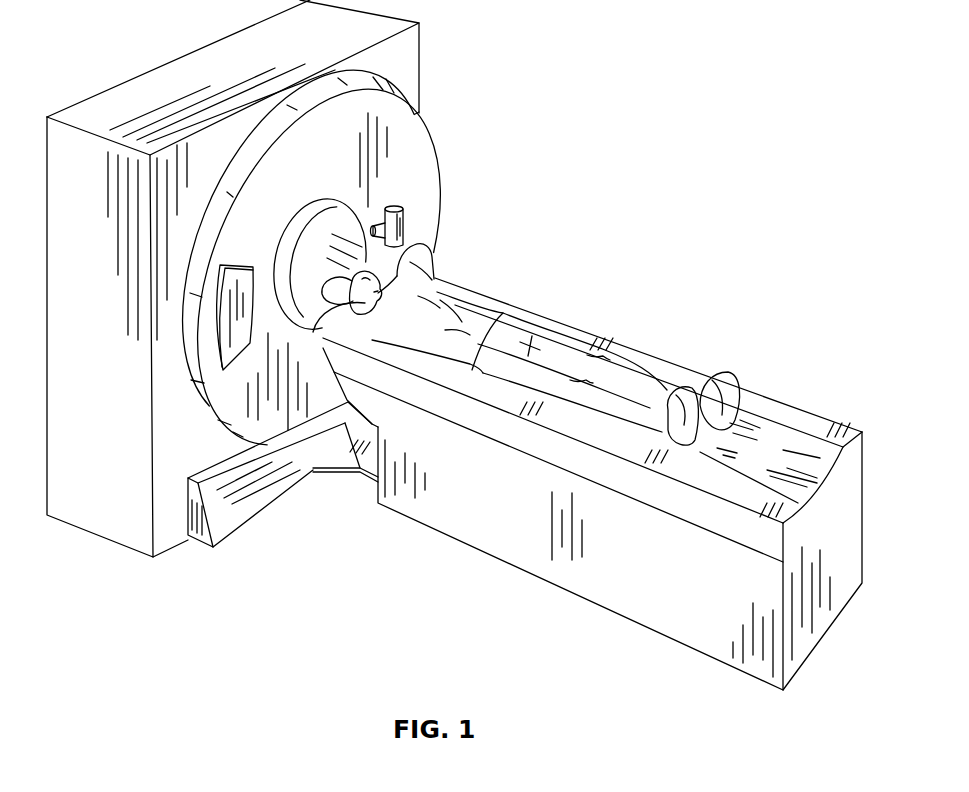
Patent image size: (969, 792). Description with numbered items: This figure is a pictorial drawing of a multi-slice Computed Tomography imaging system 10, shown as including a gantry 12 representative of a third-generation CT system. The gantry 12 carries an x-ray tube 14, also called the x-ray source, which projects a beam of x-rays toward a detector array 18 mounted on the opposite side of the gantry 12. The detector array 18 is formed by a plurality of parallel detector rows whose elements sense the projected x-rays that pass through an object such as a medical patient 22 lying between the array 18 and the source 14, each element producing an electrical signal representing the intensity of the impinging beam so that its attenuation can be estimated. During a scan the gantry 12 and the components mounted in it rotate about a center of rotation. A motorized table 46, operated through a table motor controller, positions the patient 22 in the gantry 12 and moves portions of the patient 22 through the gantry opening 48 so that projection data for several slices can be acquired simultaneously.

The CT imaging system 10 is at (598, 123).
The gantry 12 is at (409, 99).
The x-ray tube 14 is at (403, 227).
The detector array 18 is at (235, 353).
The medical patient 22 is at (471, 299).
The motorized table 46 is at (480, 513).
The gantry opening 48 is at (293, 233).